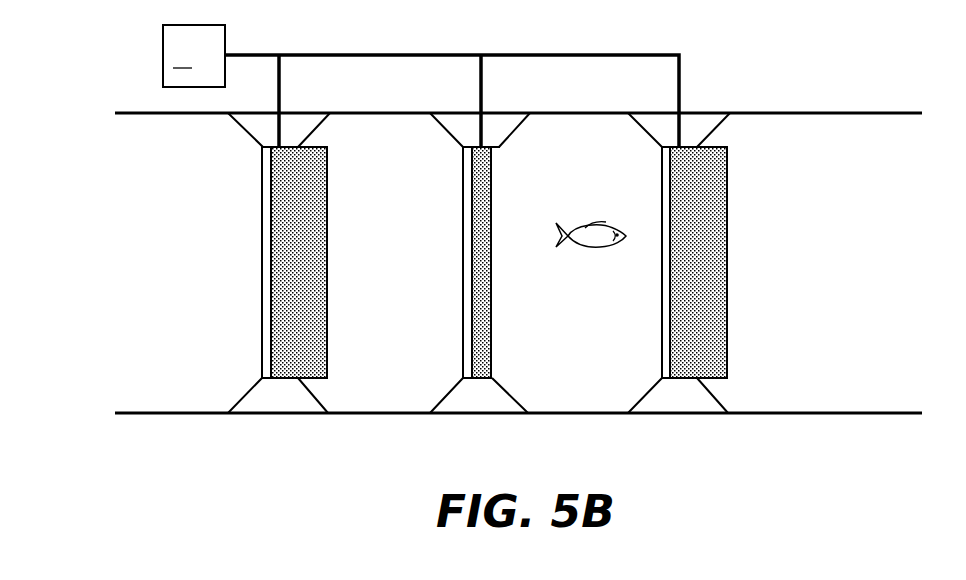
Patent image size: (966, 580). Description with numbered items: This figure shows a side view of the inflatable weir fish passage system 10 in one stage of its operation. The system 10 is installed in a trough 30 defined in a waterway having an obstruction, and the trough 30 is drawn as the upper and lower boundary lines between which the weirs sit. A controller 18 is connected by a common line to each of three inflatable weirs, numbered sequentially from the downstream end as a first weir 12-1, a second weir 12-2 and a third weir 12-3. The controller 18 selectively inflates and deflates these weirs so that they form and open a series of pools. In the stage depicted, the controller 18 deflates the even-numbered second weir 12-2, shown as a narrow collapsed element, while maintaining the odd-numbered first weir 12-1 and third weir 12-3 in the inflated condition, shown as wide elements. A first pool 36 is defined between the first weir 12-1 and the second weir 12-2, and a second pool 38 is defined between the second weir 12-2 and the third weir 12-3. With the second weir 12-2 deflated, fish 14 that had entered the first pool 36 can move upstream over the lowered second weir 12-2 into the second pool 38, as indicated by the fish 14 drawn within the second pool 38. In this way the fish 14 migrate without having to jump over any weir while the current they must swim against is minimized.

The fish passage system 10 is at (821, 137).
The trough 30 is at (811, 415).
The controller 18 is at (421, 86).
The first weir 12-1 is at (279, 378).
The second weir 12-2 is at (483, 378).
The third weir 12-3 is at (676, 378).
The first pool 36 is at (401, 370).
The second pool 38 is at (585, 373).
The fish 14 is at (598, 248).